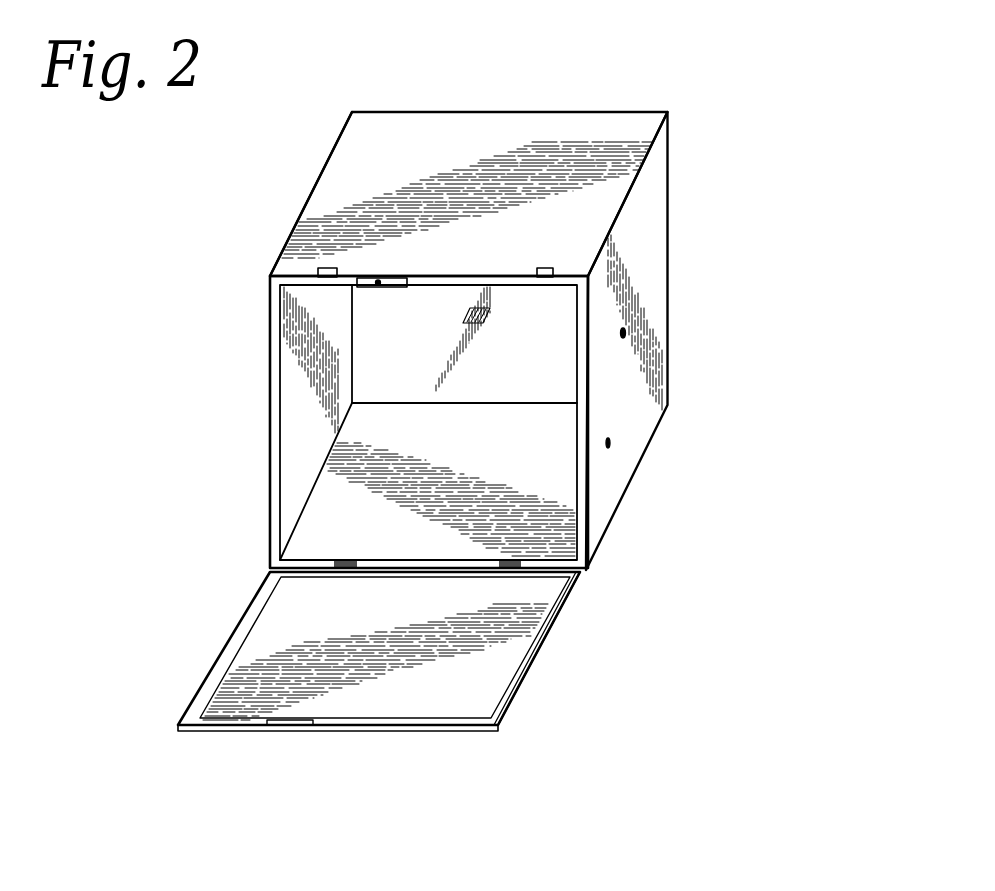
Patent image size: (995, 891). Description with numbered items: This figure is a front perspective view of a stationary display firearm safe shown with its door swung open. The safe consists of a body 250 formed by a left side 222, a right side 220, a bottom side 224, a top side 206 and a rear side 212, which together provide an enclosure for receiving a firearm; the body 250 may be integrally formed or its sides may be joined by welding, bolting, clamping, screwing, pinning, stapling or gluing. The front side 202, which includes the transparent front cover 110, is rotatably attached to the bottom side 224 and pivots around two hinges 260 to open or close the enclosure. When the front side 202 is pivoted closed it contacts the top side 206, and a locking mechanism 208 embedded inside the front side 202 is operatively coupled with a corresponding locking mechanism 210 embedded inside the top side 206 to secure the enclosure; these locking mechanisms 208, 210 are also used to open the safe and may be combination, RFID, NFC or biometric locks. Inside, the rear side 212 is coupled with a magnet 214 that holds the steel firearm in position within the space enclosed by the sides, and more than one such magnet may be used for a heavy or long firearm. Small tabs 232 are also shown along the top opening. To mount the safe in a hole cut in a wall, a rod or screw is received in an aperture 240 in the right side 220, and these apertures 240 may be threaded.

The transparent front cover 110 is at (277, 618).
The front side 202 is at (260, 582).
The top side 206 is at (604, 120).
The locking mechanism 208 is at (287, 722).
The locking mechanism 210 is at (395, 276).
The rear side 212 is at (383, 357).
The magnet 214 is at (482, 323).
The right side 220 is at (647, 225).
The left side 222 is at (318, 350).
The bottom side 224 is at (560, 493).
The latch tabs 232 is at (540, 267).
The aperture 240 is at (610, 442).
The body 250 is at (323, 158).
The hinges 260 is at (500, 567).